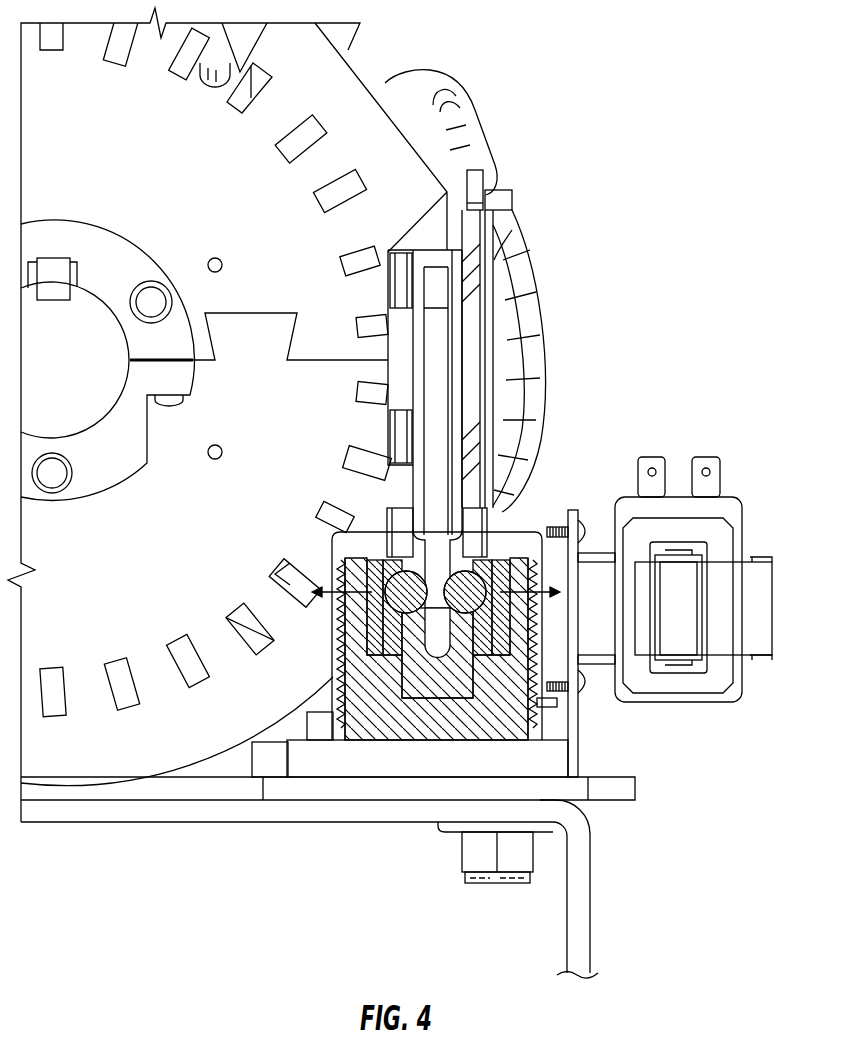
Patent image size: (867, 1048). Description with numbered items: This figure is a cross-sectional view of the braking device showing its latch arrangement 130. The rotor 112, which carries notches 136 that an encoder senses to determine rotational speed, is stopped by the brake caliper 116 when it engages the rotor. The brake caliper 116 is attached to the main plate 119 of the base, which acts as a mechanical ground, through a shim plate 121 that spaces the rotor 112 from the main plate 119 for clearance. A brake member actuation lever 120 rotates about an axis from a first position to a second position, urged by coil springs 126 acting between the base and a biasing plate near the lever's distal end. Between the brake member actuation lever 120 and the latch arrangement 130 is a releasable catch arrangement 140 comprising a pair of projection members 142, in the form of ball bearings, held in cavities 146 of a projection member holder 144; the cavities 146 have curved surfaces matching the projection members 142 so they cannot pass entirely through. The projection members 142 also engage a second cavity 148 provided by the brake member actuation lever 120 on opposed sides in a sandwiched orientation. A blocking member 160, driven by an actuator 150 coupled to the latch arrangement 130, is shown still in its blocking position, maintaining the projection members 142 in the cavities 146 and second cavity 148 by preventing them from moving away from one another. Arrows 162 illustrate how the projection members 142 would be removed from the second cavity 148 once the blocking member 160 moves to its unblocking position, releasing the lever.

The rotor 112 is at (393, 147).
The brake caliper 116 is at (497, 353).
The main plate 119 is at (583, 883).
The brake member actuation lever 120 is at (437, 417).
The shim plate 121 is at (578, 790).
The coil springs 126 is at (345, 640).
The latch arrangement 130 is at (440, 758).
The notches 136 is at (296, 143).
The catch arrangement 140 is at (393, 665).
The projection members 142 is at (388, 550).
The projection member holder 144 is at (410, 683).
The cavities 146 is at (465, 618).
The second cavity 148 is at (437, 590).
The actuator 150 is at (736, 540).
The blocking member 160 is at (277, 582).
The arrows 162 is at (370, 600).